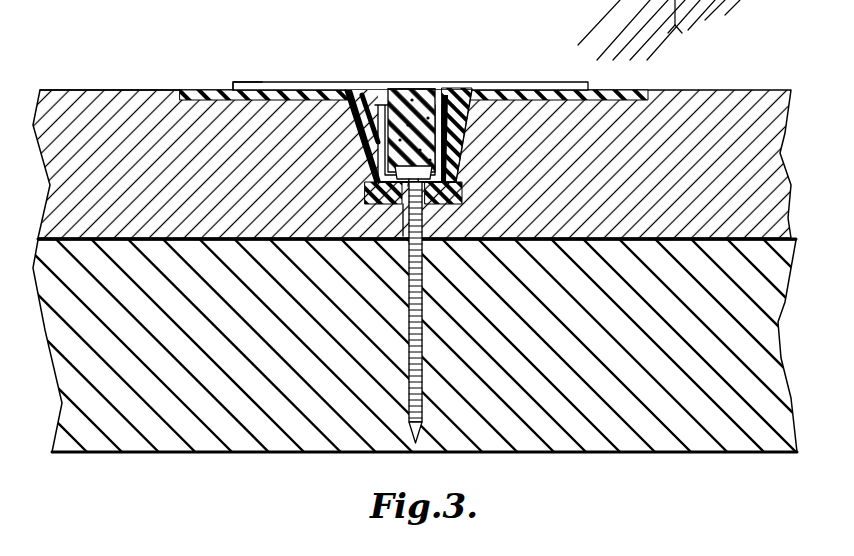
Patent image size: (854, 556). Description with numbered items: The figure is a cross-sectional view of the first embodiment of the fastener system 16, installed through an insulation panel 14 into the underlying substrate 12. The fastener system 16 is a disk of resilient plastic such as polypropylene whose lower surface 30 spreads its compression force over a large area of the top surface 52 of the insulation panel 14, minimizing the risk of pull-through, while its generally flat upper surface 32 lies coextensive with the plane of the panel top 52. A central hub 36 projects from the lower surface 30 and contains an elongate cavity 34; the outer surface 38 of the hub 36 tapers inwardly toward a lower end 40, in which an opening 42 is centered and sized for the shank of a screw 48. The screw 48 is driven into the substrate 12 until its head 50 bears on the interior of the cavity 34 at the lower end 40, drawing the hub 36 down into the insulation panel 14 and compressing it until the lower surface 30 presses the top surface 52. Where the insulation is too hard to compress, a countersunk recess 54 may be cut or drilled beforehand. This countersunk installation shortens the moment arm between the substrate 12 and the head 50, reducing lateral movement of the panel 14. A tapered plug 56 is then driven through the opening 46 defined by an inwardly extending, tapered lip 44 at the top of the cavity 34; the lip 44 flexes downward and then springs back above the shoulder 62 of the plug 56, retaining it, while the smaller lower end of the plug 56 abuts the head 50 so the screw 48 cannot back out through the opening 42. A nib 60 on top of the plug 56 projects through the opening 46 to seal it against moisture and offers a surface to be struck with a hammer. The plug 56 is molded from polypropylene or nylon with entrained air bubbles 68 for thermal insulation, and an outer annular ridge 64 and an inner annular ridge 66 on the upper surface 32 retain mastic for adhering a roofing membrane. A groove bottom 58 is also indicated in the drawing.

The substrate 12 is at (256, 361).
The insulation panel 14 is at (742, 100).
The fastener system 16 is at (385, 227).
The lower surface 30 is at (200, 102).
The upper surface 32 is at (207, 96).
The elongate cavity 34 is at (440, 100).
The central hub 36 is at (364, 240).
The outer surface of hub 38 is at (461, 193).
The lower end 40 is at (447, 230).
The opening 42 is at (368, 228).
The lip 44 is at (386, 100).
The opening 46 is at (432, 98).
The screw 48 is at (421, 382).
The head of screw 50 is at (458, 140).
The top surface of insulation panel 52 is at (93, 88).
The countersunk recess 54 is at (376, 190).
The tapered plug 56 is at (384, 162).
The groove bottom 58 is at (380, 184).
The nib 60 is at (421, 89).
The shoulder 62 is at (362, 120).
The outer annular ridge 64 is at (234, 88).
The inner annular ridge 66 is at (317, 89).
The bubbles 68 is at (450, 130).